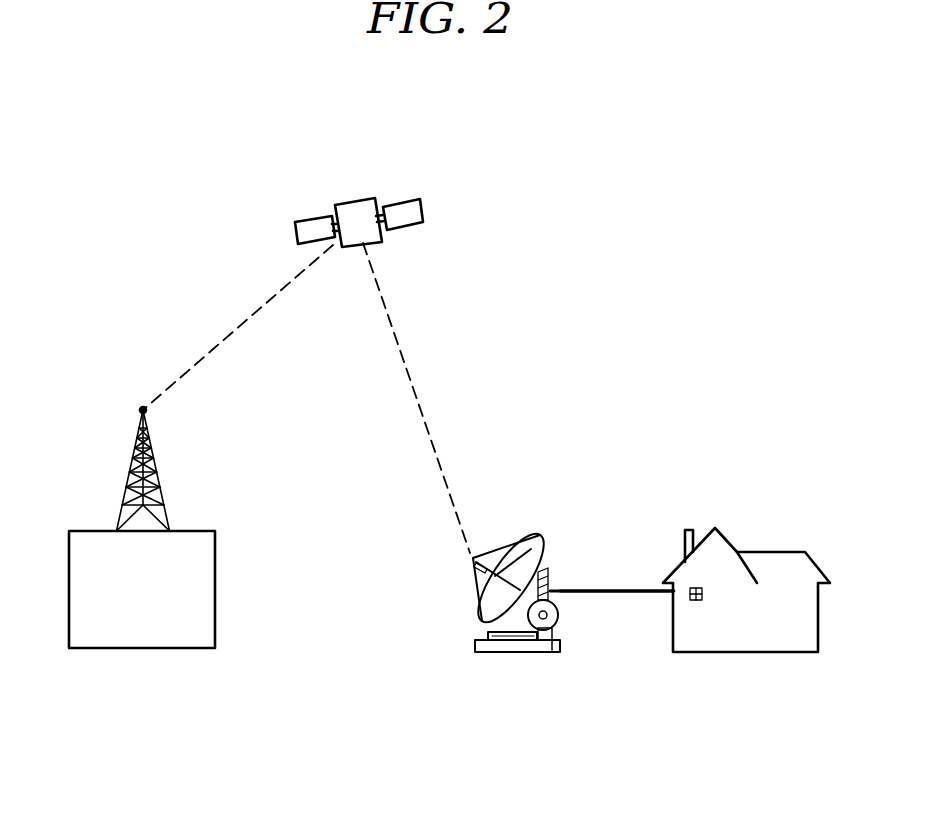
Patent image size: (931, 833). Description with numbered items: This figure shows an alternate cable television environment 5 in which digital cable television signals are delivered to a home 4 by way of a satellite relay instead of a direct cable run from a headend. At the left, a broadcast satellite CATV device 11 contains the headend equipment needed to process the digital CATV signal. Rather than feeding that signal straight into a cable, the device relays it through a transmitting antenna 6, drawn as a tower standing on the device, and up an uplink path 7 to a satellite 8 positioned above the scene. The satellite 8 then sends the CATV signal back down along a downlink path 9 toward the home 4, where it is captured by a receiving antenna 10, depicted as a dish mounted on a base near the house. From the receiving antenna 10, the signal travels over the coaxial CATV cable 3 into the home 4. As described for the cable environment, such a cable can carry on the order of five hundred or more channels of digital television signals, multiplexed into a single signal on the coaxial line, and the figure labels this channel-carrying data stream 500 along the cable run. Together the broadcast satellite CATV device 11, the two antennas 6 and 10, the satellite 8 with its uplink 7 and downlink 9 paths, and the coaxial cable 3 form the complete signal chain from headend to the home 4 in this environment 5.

The alternate cable television environment 5 is at (439, 97).
The satellite 8 is at (382, 240).
The uplink path 7 is at (245, 322).
The downlink path 9 is at (418, 402).
The antenna 6 is at (157, 472).
The broadcast satellite CATV device 11 is at (215, 590).
The antenna 10 is at (473, 590).
The coaxial CATV cable 3 is at (583, 588).
The data stream 500 is at (620, 607).
The home 4 is at (750, 552).